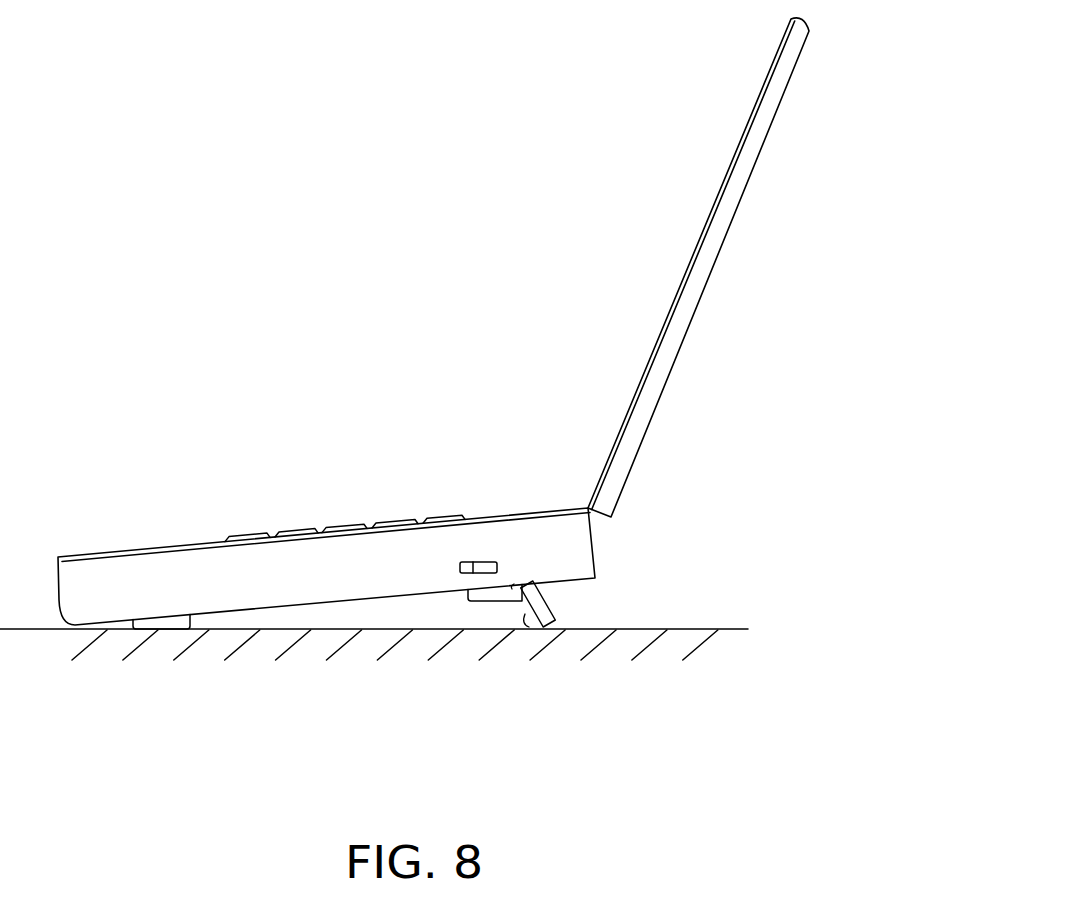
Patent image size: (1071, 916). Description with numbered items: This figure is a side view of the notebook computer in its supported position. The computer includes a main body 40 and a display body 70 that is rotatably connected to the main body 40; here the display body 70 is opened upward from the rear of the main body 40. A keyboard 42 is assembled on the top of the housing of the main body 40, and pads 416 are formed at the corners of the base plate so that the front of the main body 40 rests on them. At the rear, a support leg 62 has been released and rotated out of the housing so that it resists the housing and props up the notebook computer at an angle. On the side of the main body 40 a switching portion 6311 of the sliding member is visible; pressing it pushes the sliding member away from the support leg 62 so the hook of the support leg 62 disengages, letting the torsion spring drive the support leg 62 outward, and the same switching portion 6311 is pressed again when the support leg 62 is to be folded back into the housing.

The display body 70 is at (718, 223).
The main body 40 is at (328, 573).
The keyboard 42 is at (244, 536).
The pads 416 is at (170, 623).
The switching portion 6311 is at (483, 568).
The support leg 62 is at (545, 607).